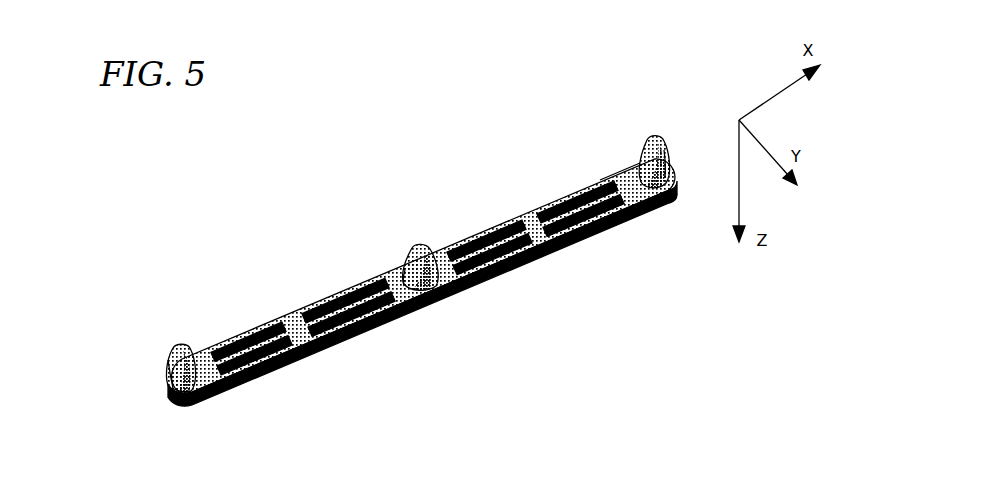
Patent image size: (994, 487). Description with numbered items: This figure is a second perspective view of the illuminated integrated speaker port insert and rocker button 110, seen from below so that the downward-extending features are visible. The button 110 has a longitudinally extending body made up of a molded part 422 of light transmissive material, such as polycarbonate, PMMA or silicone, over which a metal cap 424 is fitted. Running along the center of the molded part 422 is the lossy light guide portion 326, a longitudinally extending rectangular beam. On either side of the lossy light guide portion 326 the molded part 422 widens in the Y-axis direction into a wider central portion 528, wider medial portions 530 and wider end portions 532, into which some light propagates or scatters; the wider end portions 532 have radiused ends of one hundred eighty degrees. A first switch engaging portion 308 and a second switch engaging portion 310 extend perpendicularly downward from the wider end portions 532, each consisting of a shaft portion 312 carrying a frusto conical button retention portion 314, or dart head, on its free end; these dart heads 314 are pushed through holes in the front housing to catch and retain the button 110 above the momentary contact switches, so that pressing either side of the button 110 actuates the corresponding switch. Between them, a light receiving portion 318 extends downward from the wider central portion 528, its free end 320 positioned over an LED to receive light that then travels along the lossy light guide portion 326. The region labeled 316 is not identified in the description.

The illuminated integrated speaker port insert and rocker button 110 is at (441, 421).
The first switch engaging portion 308 is at (172, 358).
The second switch engaging portion 310 is at (648, 137).
The shaft portion 312 is at (165, 382).
The frusto conical button retention portion 314 is at (170, 366).
The end portion of body 316 is at (206, 378).
The light receiving portion 318 is at (408, 260).
The free end 320 is at (414, 248).
The lossy light guide portion 326 is at (248, 338).
The molded part 422 is at (532, 222).
The metal cap 424 is at (426, 303).
The wider central portion 528 is at (400, 308).
The wider medial portion 530 is at (289, 330).
The wider end portion 532 is at (171, 415).